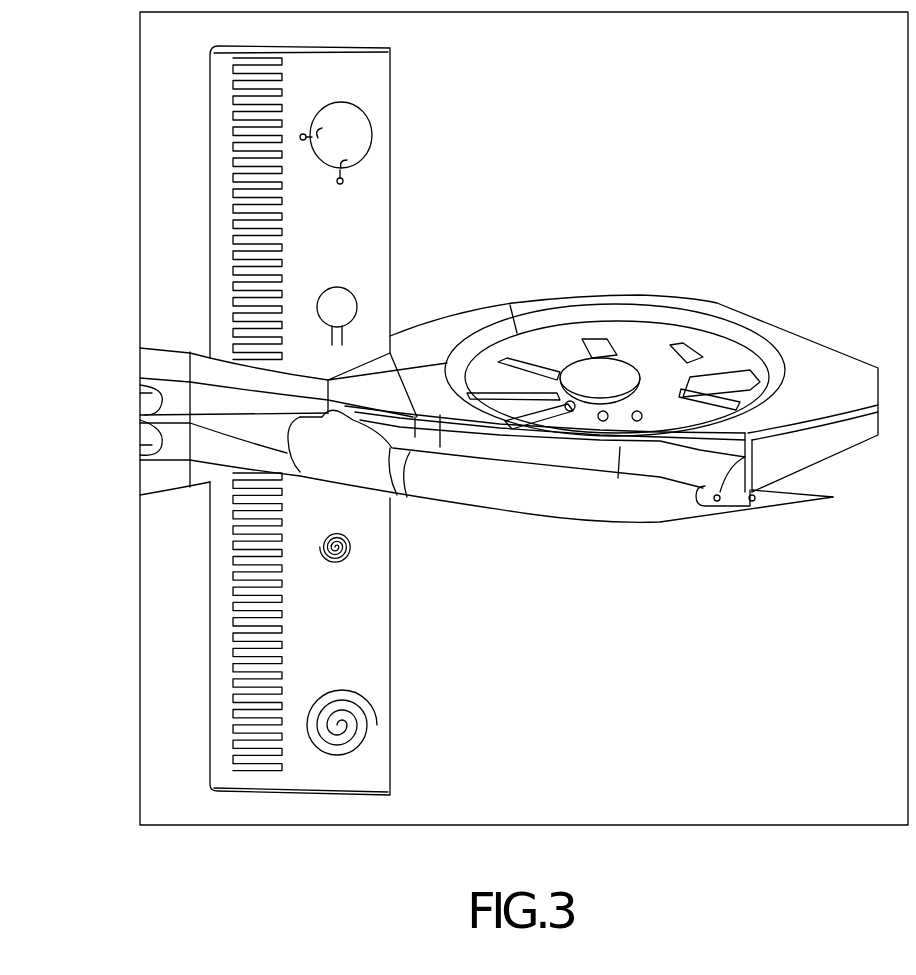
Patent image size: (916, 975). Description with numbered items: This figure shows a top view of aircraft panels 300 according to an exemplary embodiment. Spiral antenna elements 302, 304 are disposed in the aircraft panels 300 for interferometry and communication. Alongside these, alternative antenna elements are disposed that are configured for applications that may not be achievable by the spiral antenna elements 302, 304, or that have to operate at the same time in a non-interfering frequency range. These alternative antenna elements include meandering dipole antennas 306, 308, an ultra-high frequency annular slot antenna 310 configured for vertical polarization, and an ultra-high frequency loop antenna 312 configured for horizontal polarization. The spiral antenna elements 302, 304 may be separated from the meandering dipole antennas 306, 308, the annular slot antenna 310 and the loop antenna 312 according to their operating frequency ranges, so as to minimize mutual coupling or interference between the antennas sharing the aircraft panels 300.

The aircraft panels 300 is at (375, 60).
The spiral antenna element 302 is at (348, 559).
The spiral antenna element 304 is at (366, 748).
The meandering dipole antenna 306 is at (235, 180).
The meandering dipole antenna 308 is at (235, 635).
The ultra-high frequency annular slot antenna 310 is at (367, 112).
The ultra-high frequency loop antenna 312 is at (355, 291).